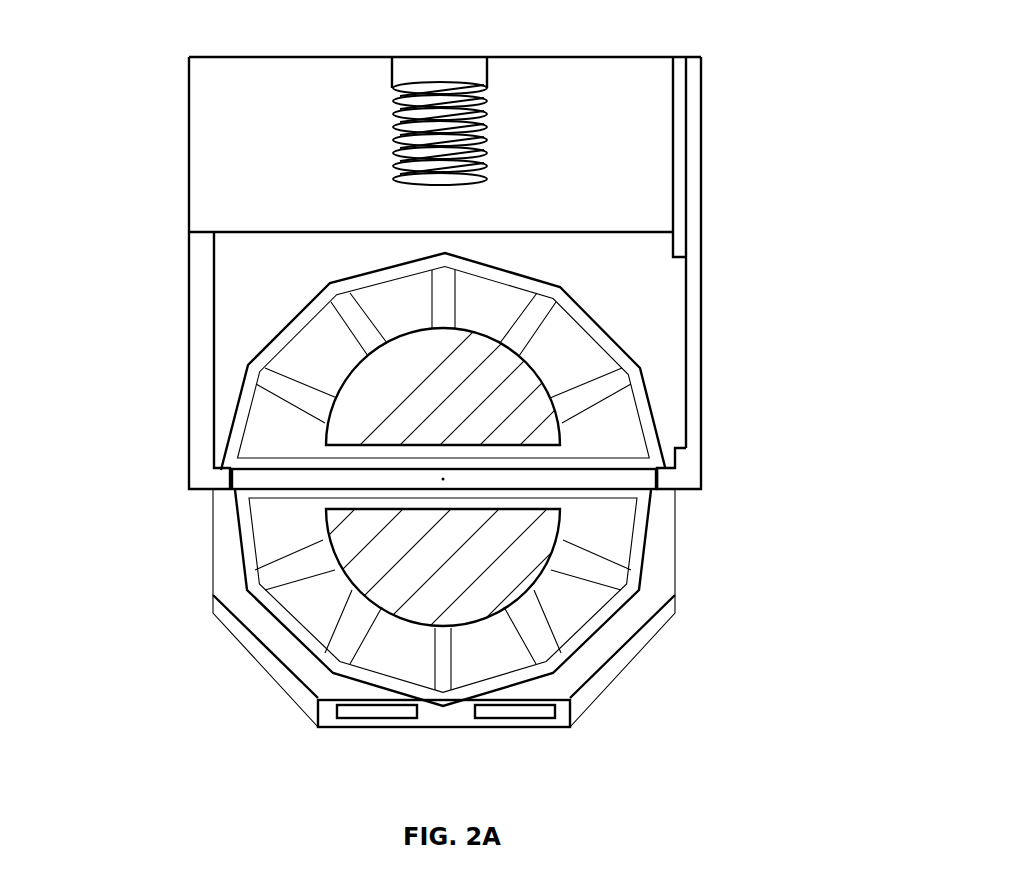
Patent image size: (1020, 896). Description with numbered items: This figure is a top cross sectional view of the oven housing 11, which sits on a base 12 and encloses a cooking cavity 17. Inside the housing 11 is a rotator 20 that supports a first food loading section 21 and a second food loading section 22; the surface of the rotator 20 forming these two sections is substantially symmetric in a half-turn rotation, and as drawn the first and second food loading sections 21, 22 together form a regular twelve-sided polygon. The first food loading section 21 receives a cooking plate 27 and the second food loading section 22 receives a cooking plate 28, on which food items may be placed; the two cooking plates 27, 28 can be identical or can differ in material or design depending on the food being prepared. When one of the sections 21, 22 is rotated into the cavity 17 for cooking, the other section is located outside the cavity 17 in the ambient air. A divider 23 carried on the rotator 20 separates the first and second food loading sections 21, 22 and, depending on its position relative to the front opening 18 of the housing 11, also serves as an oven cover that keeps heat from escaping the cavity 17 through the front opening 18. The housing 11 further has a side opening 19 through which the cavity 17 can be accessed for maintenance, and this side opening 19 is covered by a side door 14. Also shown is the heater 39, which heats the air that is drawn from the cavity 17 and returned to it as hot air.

The housing 11 is at (204, 236).
The base 12 is at (632, 666).
The side door 14 is at (712, 113).
The cavity 17 is at (283, 302).
The front opening 18 is at (664, 497).
The side opening 19 is at (682, 362).
The rotator 20 is at (225, 558).
The first food loading section 21 is at (539, 628).
The second food loading section 22 is at (549, 325).
The divider 23 is at (257, 484).
The cooking plate 27 is at (409, 574).
The cooking plate 28 is at (436, 418).
The heater 39 is at (379, 139).